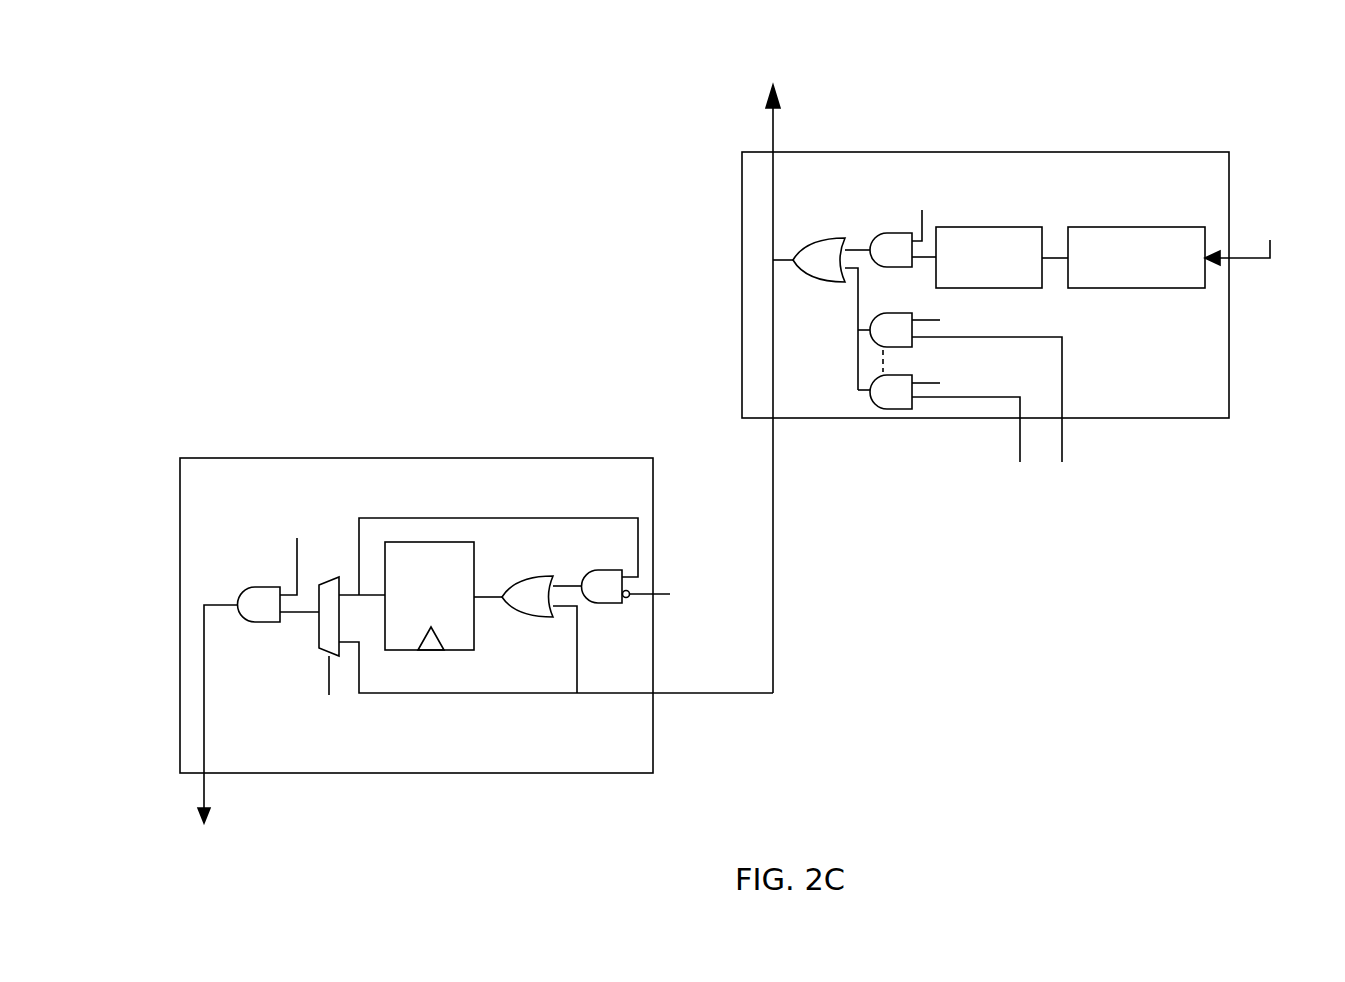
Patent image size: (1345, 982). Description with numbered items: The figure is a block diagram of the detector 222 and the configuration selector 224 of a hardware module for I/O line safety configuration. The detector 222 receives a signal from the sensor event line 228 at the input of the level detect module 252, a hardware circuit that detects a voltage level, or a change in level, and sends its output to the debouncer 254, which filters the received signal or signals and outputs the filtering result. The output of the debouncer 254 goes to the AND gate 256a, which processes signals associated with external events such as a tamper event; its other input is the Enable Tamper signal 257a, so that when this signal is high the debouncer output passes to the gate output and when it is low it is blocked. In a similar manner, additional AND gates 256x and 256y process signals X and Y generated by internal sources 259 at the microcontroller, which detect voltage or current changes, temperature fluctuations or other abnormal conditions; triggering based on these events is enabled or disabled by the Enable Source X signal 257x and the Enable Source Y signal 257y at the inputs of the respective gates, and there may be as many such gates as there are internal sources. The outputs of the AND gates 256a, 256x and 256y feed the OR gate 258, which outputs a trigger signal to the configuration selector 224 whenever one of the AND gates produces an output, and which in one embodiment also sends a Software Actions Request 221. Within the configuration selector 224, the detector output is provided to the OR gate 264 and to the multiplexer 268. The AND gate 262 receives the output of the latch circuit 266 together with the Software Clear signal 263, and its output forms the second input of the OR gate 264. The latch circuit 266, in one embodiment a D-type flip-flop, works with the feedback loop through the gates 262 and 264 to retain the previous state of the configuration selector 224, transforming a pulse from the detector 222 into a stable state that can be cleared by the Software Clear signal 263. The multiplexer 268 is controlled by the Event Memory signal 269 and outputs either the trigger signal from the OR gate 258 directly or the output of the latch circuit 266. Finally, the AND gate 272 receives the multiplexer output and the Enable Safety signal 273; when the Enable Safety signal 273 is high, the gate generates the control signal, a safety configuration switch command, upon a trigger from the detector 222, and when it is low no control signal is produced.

The Software Actions Request 221 is at (830, 73).
The detector 222 is at (1221, 186).
The configuration selector 224 is at (647, 487).
The sensor event line 228 is at (1325, 235).
The level detect module 252 is at (1122, 279).
The debouncer 254 is at (974, 279).
The AND logic gate 256a is at (903, 250).
The AND logic gate 256x is at (885, 342).
The AND logic gate 256y is at (885, 392).
The Enable Tamper signal 257a is at (907, 200).
The Enable Source X signal 257x is at (1091, 328).
The Enable Source Y signal 257y is at (1041, 392).
The OR gate 258 is at (831, 314).
The internal sources 259 is at (1075, 497).
The AND gate 262 is at (602, 586).
The Software Clear signal 263 is at (745, 590).
The OR gate 264 is at (542, 634).
The latch circuit 266 is at (498, 584).
The multiplexer 268 is at (322, 618).
The Event Memory signal 269 is at (317, 743).
The AND gate 272 is at (234, 719).
The Enable Safety signal 273 is at (333, 535).